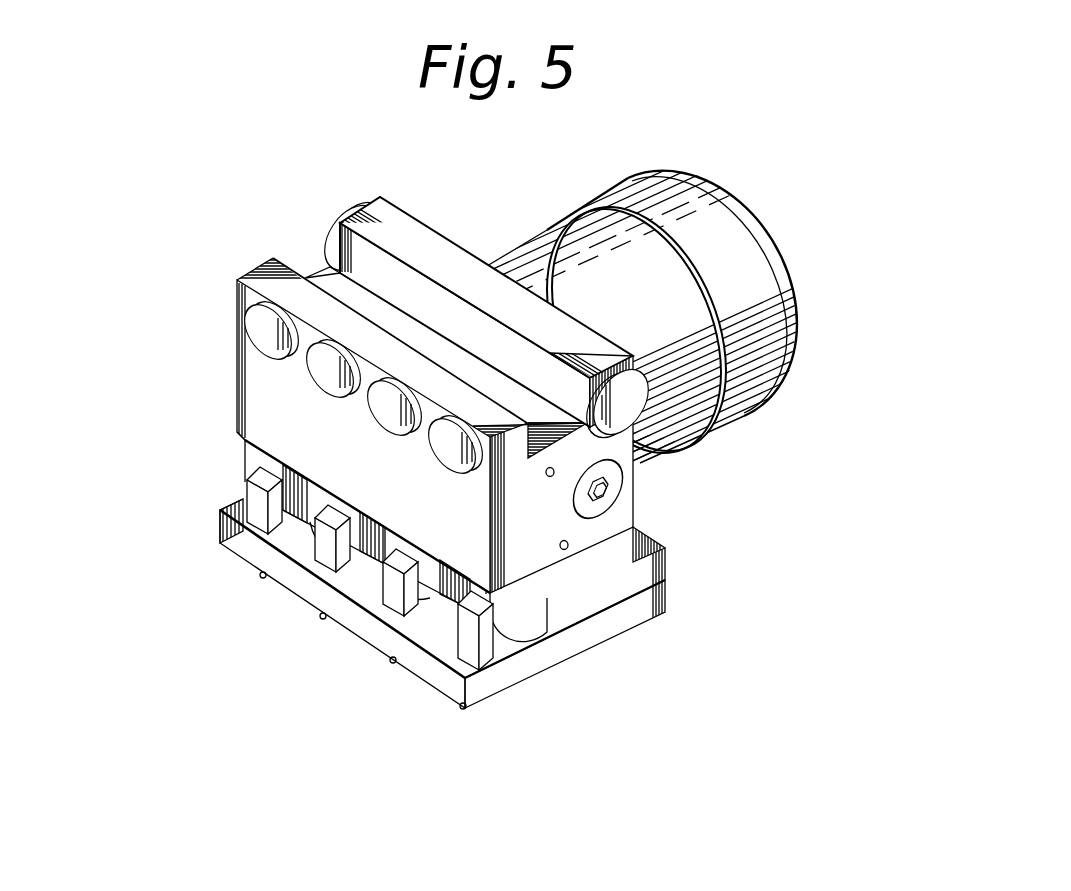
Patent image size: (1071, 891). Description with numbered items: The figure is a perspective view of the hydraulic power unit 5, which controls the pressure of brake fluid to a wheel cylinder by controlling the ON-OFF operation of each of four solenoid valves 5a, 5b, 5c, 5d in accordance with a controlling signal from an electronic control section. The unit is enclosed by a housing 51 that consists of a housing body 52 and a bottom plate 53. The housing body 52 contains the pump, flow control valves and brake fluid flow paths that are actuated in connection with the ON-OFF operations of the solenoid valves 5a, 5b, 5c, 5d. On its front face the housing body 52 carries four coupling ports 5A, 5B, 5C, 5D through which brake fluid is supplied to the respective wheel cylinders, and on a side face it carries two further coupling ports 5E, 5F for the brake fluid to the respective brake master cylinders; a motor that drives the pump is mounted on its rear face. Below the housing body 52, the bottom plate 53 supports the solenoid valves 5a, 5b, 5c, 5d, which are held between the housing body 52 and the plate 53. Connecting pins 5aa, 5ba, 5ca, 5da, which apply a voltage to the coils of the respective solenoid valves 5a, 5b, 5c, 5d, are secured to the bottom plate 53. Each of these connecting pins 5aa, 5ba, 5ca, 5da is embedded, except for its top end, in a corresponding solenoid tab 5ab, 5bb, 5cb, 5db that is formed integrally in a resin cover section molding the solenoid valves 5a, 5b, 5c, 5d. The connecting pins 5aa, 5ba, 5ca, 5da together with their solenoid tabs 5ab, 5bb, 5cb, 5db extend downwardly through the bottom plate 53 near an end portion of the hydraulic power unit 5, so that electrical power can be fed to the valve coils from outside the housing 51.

The hydraulic power unit 5 is at (528, 346).
The coupling port 5E is at (349, 210).
The coupling port 5F is at (636, 403).
The coupling port 5A is at (270, 360).
The coupling port 5B is at (326, 397).
The coupling port 5C is at (378, 432).
The coupling port 5D is at (440, 465).
The solenoid valve 5a is at (242, 457).
The solenoid valve 5b is at (358, 557).
The solenoid valve 5c is at (435, 642).
The solenoid valve 5d is at (516, 630).
The connecting pin 5aa is at (262, 578).
The solenoid tab 5ab is at (247, 527).
The connecting pin 5ba is at (323, 619).
The solenoid tab 5bb is at (320, 562).
The connecting pin 5ca is at (393, 663).
The solenoid tab 5cb is at (408, 584).
The connecting pin 5da is at (464, 709).
The solenoid tab 5db is at (475, 660).
The housing 51 is at (485, 614).
The housing body 52 is at (600, 597).
The bottom plate 53 is at (657, 620).